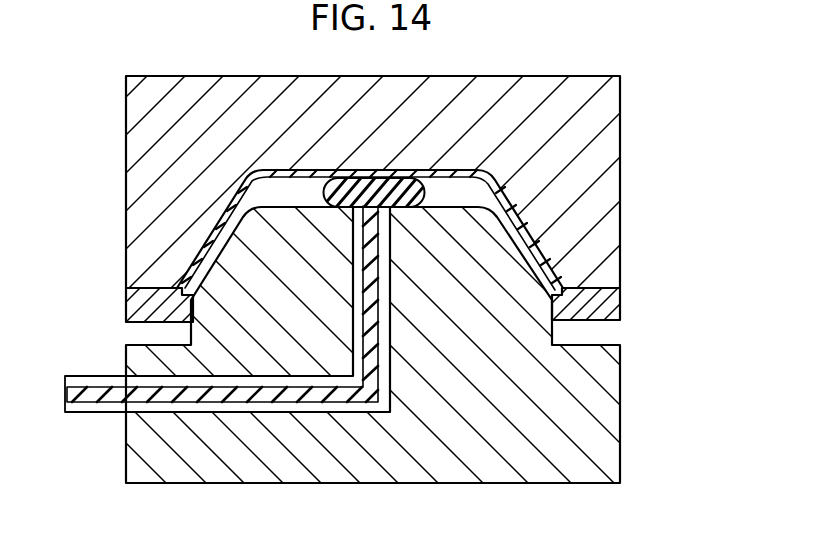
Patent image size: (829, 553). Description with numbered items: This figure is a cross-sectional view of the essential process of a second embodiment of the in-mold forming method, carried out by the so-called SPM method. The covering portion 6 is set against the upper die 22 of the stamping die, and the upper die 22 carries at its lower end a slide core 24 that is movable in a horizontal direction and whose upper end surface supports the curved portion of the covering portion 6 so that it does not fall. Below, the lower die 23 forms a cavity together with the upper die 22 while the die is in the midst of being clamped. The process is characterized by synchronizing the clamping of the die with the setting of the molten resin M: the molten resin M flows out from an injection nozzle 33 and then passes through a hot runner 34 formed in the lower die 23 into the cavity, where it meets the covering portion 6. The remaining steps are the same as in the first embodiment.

The covering portion 6 is at (355, 171).
The molten forming material M is at (398, 187).
The upper die 22 is at (602, 136).
The lower die 23 is at (603, 400).
The slide core 24 is at (603, 306).
The injection nozzle 33 is at (82, 383).
The hot runner 34 is at (301, 412).